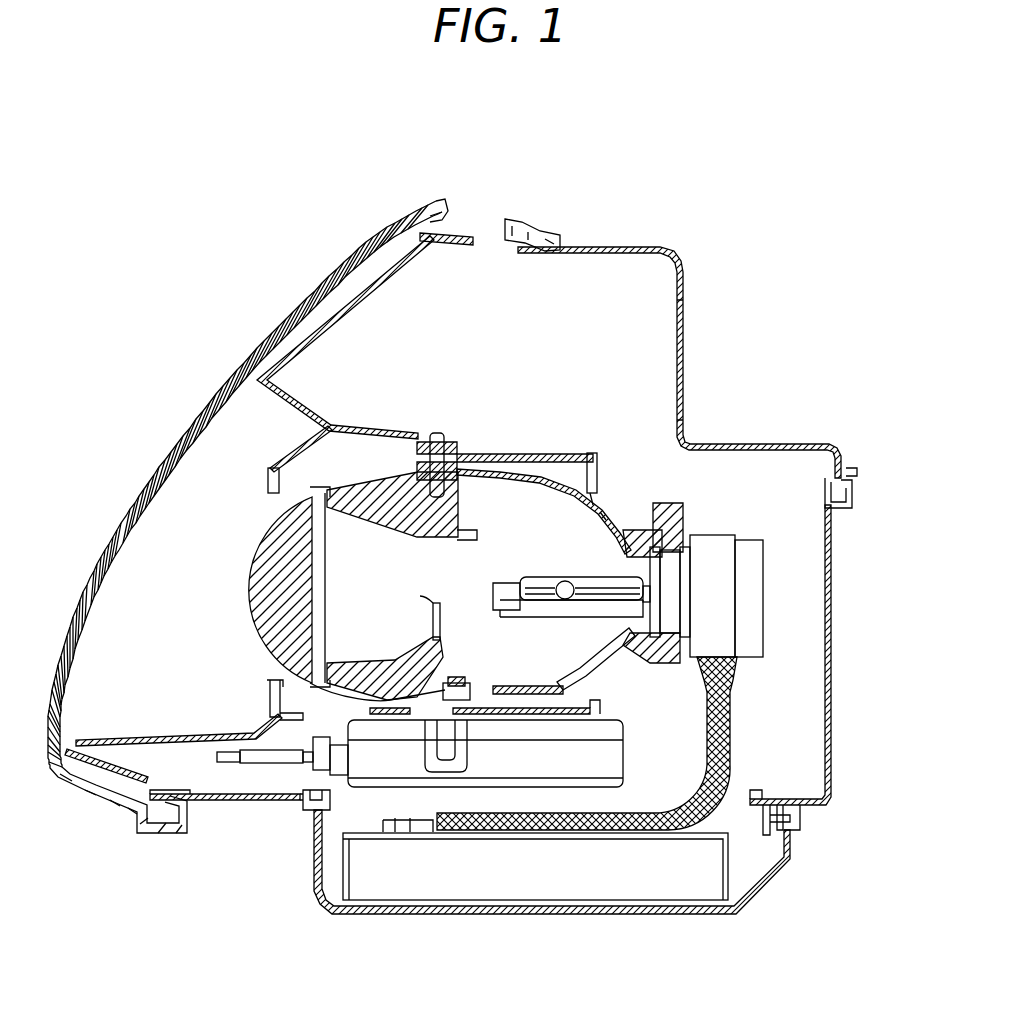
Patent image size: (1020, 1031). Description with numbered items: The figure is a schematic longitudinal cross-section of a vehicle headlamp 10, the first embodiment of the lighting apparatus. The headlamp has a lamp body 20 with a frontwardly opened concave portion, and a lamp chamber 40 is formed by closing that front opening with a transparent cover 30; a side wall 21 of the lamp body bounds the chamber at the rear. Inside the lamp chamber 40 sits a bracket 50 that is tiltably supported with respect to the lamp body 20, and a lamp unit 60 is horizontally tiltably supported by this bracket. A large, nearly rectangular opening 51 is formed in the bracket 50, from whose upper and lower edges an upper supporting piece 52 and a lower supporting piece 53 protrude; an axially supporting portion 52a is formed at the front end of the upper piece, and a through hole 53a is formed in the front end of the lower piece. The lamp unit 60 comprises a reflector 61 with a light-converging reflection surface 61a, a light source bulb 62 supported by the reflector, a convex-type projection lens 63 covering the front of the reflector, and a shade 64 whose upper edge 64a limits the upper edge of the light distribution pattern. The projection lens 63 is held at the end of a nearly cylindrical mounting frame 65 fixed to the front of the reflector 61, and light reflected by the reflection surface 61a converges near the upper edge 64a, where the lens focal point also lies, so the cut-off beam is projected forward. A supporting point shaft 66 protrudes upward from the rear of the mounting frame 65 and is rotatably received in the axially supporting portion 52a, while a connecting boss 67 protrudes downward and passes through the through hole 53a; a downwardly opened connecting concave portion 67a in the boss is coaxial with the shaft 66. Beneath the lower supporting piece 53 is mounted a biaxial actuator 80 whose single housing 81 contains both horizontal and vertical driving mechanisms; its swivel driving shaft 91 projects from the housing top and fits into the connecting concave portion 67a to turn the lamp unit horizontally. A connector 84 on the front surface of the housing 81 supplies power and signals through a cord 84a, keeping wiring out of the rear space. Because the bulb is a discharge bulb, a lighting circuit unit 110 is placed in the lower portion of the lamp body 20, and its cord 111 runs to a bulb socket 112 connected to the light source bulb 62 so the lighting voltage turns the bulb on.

The vehicle headlamp 10 is at (334, 108).
The lamp body 20 is at (666, 245).
The housing side wall 21 is at (688, 345).
The transparent cover 30 is at (185, 428).
The lamp chamber 40 is at (487, 268).
The bracket 50 is at (550, 502).
The opening 51 is at (613, 493).
The upper supporting piece 52 is at (512, 453).
The axially supporting portion 52a is at (452, 448).
The lower supporting piece 53 is at (590, 703).
The through hole 53a is at (443, 693).
The lamp unit 60 is at (276, 559).
The reflector 61 is at (610, 517).
The reflection surface 61a is at (533, 487).
The light source bulb 62 is at (540, 590).
The projection lens 63 is at (253, 613).
The shade 64 is at (433, 633).
The upper edge of the shade 64a is at (432, 600).
The mounting frame 65 is at (378, 478).
The supporting point shaft 66 is at (438, 440).
The connecting boss 67 is at (327, 687).
The connecting concave portion 67a is at (443, 700).
The biaxial actuator 80 is at (615, 757).
The housing 81 is at (615, 777).
The connector 84 is at (323, 770).
The cord 84a is at (250, 757).
The swivel driving shaft 91 is at (443, 680).
The lighting circuit unit 110 is at (657, 880).
The cord 111 is at (730, 710).
The bulb socket 112 is at (752, 580).